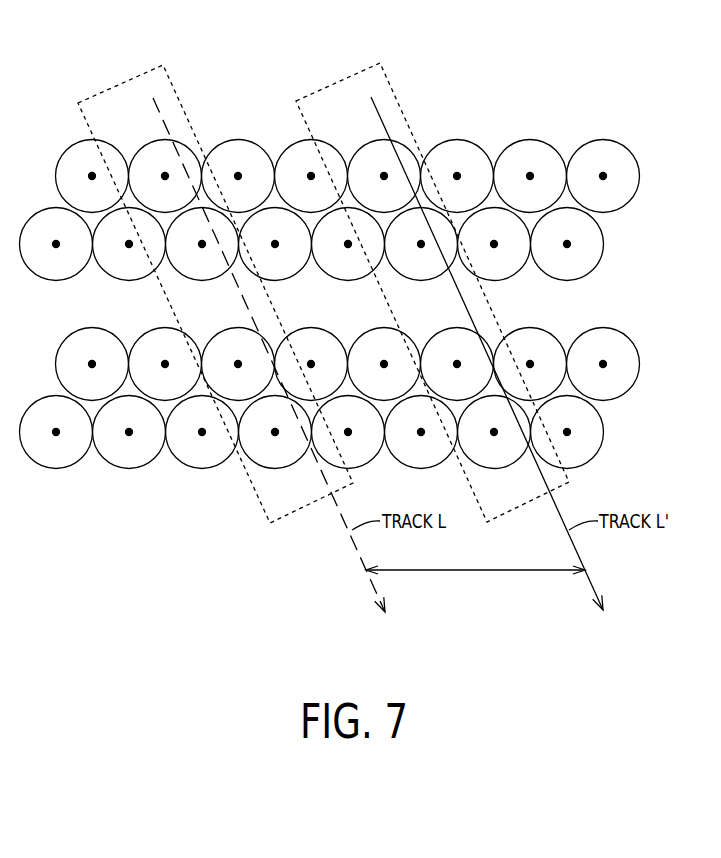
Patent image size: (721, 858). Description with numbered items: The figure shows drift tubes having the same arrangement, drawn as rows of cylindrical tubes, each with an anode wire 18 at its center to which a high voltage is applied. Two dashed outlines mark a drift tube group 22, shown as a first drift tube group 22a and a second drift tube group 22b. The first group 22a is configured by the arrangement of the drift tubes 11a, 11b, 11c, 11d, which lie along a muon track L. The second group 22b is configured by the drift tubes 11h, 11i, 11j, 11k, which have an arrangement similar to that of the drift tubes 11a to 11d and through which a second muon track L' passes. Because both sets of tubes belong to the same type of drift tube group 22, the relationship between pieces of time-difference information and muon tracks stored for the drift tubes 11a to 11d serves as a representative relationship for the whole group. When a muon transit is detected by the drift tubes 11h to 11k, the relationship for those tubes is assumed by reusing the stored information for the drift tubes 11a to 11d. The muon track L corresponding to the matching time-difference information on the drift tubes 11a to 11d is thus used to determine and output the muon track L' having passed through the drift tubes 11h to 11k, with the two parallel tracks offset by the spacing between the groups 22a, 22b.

The anode wire 18 is at (92, 176).
The drift tube 11a is at (143, 150).
The drift tube 11b is at (185, 278).
The drift tube 11c is at (224, 331).
The drift tube 11d is at (258, 464).
The drift tube 11h is at (362, 150).
The drift tube 11i is at (404, 278).
The drift tube 11j is at (443, 331).
The drift tube 11k is at (477, 464).
The drift tube group 22 is at (323, 275).
The drift tube group 22a is at (160, 53).
The drift tube group 22b is at (378, 53).